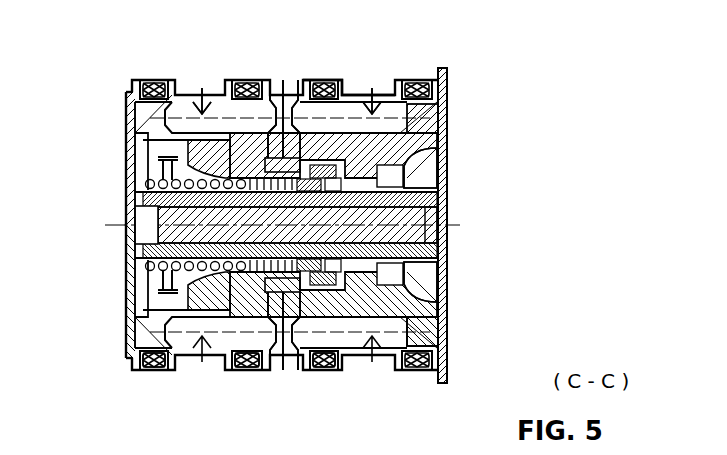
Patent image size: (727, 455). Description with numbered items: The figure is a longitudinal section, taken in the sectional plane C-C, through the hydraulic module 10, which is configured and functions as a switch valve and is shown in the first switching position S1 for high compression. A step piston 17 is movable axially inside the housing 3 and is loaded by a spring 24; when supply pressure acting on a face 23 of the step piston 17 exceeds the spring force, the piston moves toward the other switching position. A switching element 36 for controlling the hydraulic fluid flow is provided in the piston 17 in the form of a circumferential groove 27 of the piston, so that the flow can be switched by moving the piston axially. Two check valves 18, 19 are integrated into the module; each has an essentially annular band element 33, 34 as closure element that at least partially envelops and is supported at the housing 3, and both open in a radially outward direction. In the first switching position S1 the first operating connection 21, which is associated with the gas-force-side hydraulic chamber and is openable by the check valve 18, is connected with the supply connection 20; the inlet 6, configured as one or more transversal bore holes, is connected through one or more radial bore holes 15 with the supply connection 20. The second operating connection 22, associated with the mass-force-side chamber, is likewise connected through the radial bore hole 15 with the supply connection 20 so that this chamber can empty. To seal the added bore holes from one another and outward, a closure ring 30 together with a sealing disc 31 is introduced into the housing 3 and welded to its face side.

The housing 3 is at (124, 103).
The inlet 6 is at (350, 92).
The hydraulic module 10 is at (548, 128).
The radial bore hole 15 is at (286, 92).
The step piston 17 is at (160, 158).
The check valve 18 is at (207, 88).
The band element 33 is at (200, 101).
The check valve 19 is at (368, 88).
The band element 34 is at (368, 101).
The supply connection 20 is at (268, 362).
The first operating connection 21 is at (176, 362).
The second operating connection 22 is at (346, 362).
The face 23 is at (290, 352).
The spring 24 is at (155, 266).
The circumferential groove 27 is at (447, 143).
The switching element 36 is at (420, 168).
The closure ring 30 is at (447, 327).
The sealing disc 31 is at (447, 348).
The first switching position S1 is at (528, 208).